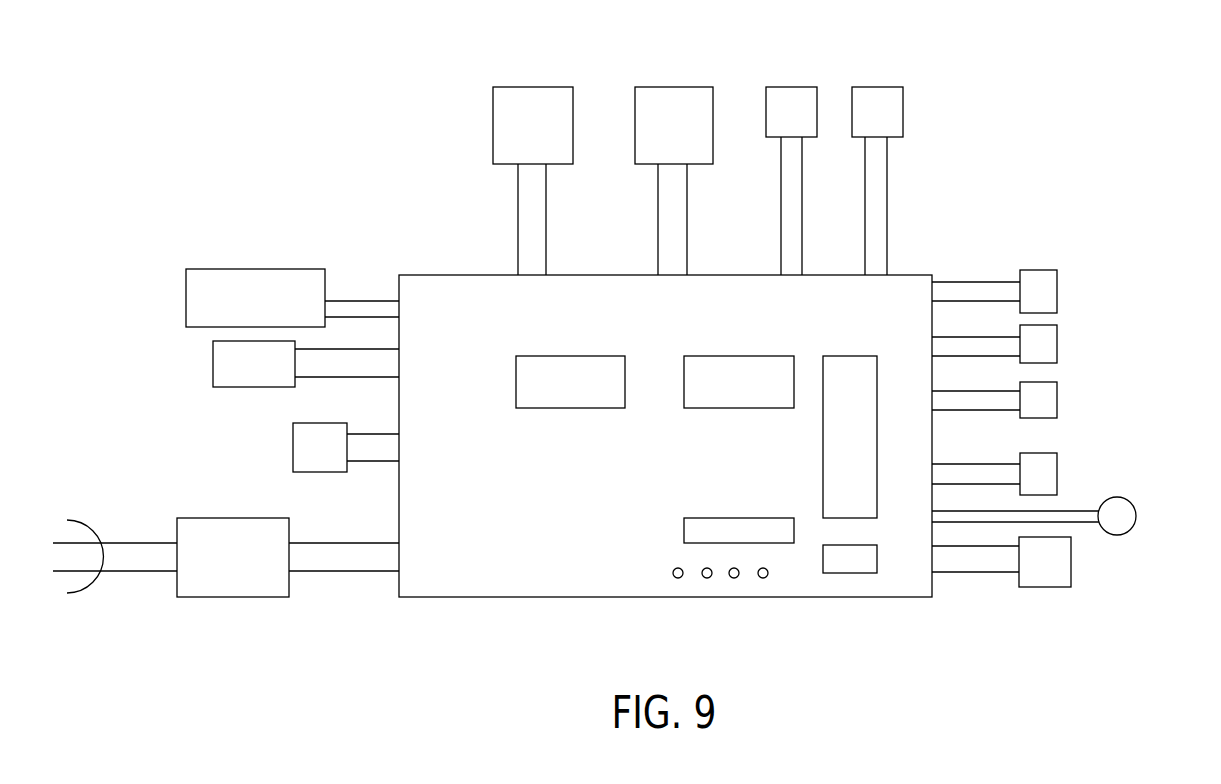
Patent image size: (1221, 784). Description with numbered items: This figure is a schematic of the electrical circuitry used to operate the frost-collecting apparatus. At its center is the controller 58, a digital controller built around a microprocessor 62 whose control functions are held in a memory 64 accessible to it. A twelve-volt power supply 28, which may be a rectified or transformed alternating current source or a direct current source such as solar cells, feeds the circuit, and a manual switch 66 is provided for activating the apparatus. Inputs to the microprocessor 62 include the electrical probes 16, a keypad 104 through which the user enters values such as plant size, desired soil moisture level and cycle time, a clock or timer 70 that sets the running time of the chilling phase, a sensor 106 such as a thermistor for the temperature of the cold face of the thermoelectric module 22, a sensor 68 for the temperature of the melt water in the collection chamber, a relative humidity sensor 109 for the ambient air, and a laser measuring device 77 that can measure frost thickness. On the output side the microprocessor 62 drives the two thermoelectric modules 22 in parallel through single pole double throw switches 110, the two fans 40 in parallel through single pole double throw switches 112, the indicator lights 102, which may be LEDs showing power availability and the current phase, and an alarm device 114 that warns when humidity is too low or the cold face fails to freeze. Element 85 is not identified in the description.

The controller 58 is at (418, 196).
The thermoelectric module 22 is at (529, 97).
The fan 40 is at (787, 97).
The keypad 104 is at (197, 295).
The electrical probe 16 is at (222, 363).
The manual switch 66 is at (303, 447).
The power supply 28 is at (198, 528).
The single pole double throw switches 110 is at (567, 355).
The single pole double throw switches 112 is at (740, 355).
The microprocessor 62 is at (870, 355).
The memory 64 is at (684, 535).
The clock or timer 70 is at (857, 575).
The indicator lights 102 is at (707, 578).
The relative humidity sensor 109 is at (1050, 289).
The sensor 106 is at (1050, 347).
The sensor 68 is at (1050, 403).
The alarm device 114 is at (1050, 481).
The laser measuring device 77 is at (1126, 515).
The output device 85 is at (1057, 575).